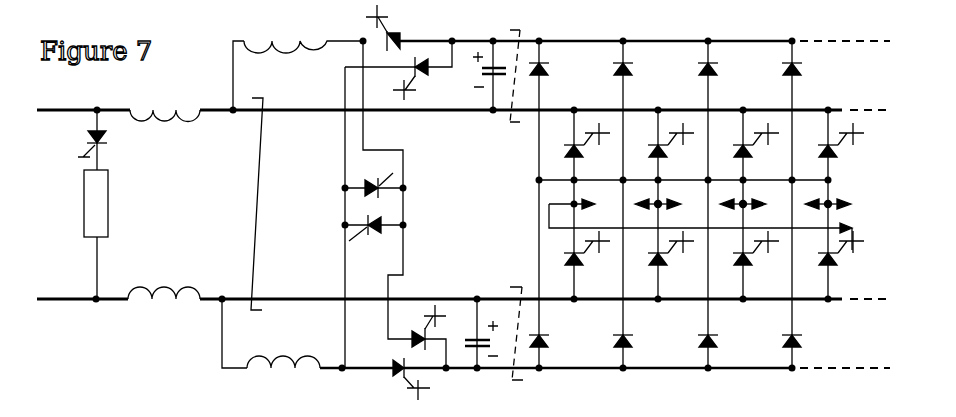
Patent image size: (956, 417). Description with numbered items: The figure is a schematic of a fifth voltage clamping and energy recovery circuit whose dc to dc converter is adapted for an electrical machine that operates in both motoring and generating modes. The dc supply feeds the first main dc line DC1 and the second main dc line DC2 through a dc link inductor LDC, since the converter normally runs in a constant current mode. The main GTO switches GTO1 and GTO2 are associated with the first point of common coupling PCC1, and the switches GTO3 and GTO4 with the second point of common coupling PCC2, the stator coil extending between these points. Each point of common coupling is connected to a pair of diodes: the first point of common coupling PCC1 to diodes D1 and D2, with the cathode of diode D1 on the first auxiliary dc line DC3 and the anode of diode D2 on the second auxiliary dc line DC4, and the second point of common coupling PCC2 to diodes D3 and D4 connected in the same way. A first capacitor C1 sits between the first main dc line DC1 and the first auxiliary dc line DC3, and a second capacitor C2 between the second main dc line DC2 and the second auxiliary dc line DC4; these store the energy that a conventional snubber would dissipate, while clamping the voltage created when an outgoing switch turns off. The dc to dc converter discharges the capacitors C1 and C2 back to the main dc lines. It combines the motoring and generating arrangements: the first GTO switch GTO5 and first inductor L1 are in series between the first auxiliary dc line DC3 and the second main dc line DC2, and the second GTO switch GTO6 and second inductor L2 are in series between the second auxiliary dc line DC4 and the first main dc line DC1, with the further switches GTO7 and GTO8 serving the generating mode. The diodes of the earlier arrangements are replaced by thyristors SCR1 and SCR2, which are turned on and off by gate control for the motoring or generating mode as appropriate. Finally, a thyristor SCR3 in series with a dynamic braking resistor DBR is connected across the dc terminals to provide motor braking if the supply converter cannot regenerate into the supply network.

The first main dc line DC1 is at (463, 101).
The second main dc line DC2 is at (463, 312).
The first auxiliary dc line DC3 is at (645, 30).
The second auxiliary dc line DC4 is at (605, 384).
The dc link inductor LDC is at (164, 207).
The first inductor L1 is at (271, 346).
The second inductor L2 is at (298, 62).
The thyristor SCR1 is at (350, 245).
The thyristor SCR2 is at (356, 176).
The thyristor SCR3 is at (120, 140).
The dynamic braking resistor DBR is at (70, 234).
The GTO switch GTO1 is at (577, 157).
The GTO switch GTO2 is at (577, 251).
The GTO switch GTO3 is at (661, 157).
The GTO switch GTO4 is at (661, 251).
The first GTO switch GTO5 is at (431, 93).
The second GTO switch GTO6 is at (417, 318).
The GTO switch GTO7 is at (404, 28).
The GTO switch GTO8 is at (385, 383).
The first capacitor C1 is at (501, 57).
The second capacitor C2 is at (484, 333).
The diode D1 is at (551, 75).
The diode D2 is at (549, 333).
The diode D3 is at (634, 75).
The diode D4 is at (634, 333).
The first point of common coupling PCC1 is at (588, 189).
The second point of common coupling PCC2 is at (670, 190).